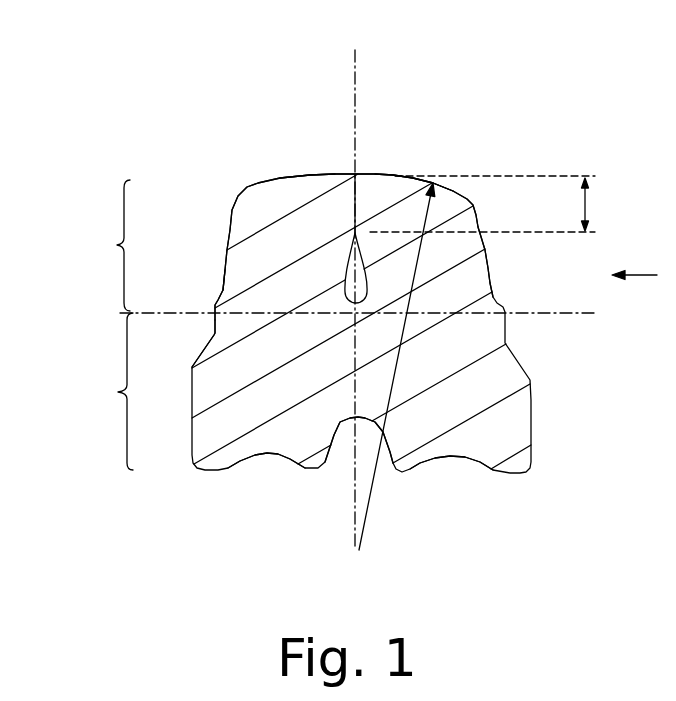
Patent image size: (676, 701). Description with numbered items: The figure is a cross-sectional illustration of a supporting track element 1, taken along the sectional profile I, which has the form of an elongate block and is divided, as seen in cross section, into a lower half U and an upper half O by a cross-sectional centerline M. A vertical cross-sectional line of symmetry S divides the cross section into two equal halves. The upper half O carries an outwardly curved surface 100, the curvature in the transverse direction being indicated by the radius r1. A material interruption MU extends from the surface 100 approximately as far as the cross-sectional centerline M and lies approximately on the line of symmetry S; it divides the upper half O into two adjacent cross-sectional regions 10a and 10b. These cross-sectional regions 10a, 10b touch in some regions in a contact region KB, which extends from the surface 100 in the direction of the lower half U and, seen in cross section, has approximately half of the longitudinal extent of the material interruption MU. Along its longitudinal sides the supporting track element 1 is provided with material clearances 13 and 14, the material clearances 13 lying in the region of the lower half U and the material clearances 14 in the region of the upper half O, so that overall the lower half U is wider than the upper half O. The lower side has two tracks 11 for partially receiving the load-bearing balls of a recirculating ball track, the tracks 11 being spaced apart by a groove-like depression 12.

The supporting track element 1 is at (380, 120).
The surface 100 is at (393, 175).
The cross-sectional region 10a is at (285, 238).
The cross-sectional region 10b is at (443, 253).
The material interruption MU is at (345, 275).
The material clearance 14 is at (222, 296).
The material clearance 13 is at (210, 336).
The track 11 is at (260, 457).
The groove-like depression 12 is at (353, 422).
The transverse curvature r1 is at (370, 497).
The contact region KB is at (502, 204).
The sectional profile I is at (642, 275).
The cross-sectional line of symmetry S is at (352, 82).
The cross-sectional centerline M is at (578, 317).
The upper half O is at (108, 245).
The lower half U is at (109, 391).